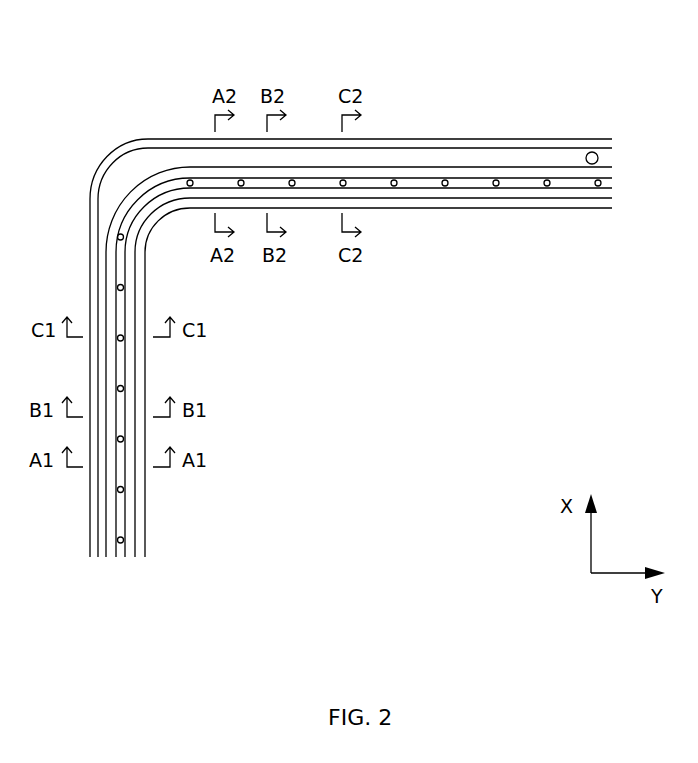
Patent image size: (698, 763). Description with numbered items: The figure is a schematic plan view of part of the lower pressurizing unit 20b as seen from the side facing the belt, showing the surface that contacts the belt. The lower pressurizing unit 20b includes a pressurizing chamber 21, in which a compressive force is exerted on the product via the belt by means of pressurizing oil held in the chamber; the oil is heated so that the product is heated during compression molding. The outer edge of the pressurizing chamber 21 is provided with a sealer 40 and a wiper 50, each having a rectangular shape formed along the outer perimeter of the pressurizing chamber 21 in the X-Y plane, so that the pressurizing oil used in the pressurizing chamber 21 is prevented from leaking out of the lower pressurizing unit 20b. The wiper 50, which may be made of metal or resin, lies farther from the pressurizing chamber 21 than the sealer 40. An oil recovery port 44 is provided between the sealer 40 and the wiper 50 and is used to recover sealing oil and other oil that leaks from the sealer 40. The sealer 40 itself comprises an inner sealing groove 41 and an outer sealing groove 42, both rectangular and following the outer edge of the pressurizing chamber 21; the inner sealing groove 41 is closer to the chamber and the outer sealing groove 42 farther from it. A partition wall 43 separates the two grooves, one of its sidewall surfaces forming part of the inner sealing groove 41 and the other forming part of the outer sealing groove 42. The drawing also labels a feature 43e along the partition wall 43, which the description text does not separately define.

The lower pressurizing unit 20b is at (83, 157).
The pressurizing chamber 21 is at (383, 401).
The sealer 40 is at (348, 348).
The inner sealing groove 41 is at (432, 210).
The outer sealing groove 42 is at (433, 175).
The partition wall 43 is at (365, 330).
The electrode / through hole 43e is at (189, 180).
The oil recovery port 44 is at (595, 152).
The wiper 50 is at (557, 143).